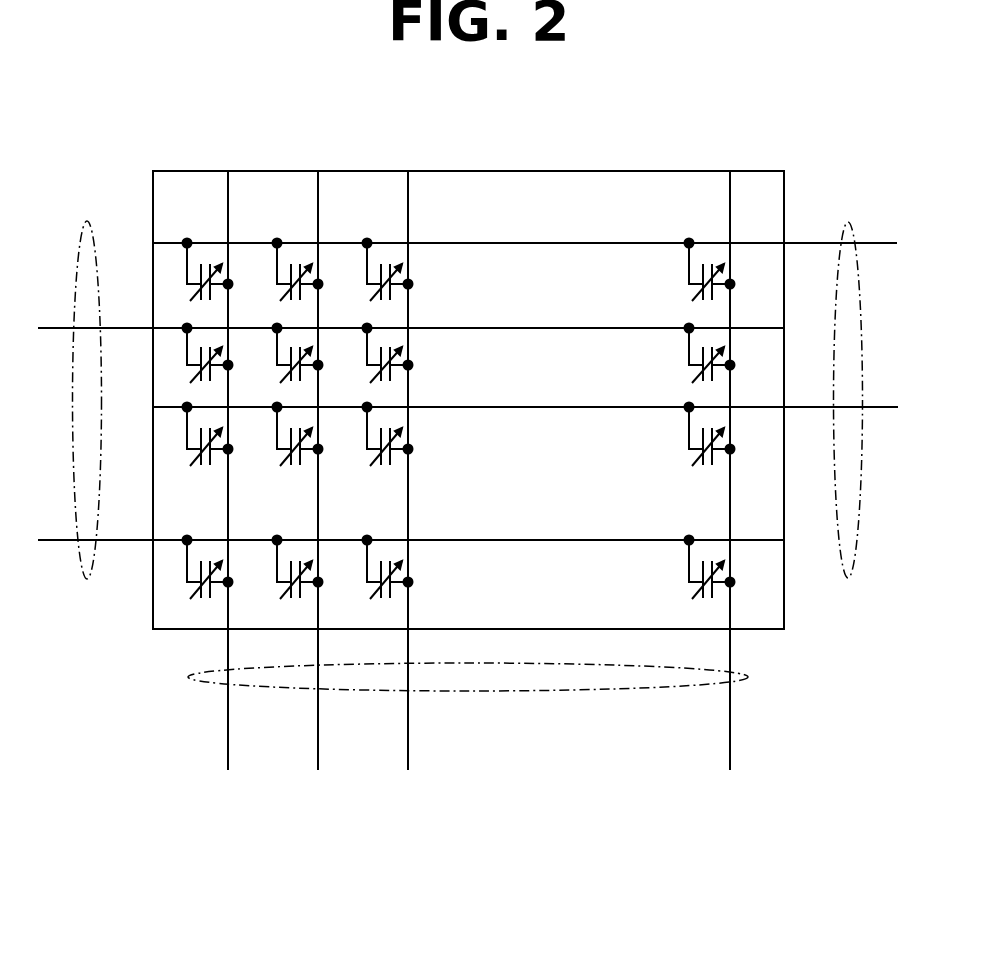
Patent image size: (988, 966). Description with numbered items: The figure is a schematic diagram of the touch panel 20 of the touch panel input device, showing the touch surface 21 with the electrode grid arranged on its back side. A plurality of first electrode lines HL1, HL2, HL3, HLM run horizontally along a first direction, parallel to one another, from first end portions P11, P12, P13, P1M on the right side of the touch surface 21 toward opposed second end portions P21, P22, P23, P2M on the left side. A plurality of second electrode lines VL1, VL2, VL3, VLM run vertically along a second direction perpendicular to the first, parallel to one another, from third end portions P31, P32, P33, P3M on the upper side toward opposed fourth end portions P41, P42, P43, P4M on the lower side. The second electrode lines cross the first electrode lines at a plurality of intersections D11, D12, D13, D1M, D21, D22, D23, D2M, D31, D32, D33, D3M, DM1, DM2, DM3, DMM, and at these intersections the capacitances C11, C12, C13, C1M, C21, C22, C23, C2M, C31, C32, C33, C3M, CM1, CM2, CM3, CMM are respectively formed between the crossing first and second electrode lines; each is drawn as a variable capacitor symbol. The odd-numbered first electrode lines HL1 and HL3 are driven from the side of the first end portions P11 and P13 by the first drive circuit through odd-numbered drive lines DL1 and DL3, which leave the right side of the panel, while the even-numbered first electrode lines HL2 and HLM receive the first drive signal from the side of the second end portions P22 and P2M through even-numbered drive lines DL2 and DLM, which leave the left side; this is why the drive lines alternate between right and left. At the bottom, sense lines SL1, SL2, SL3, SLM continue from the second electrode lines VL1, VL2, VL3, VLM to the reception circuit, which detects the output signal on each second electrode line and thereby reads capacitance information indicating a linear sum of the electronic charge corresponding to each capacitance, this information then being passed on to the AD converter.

The touch panel 20 is at (467, 171).
The touch surface 21 is at (568, 193).
The first electrode line HL1 is at (630, 243).
The first electrode line HL2 is at (630, 328).
The first electrode line HL3 is at (630, 407).
The first electrode line HLM is at (630, 540).
The drive line DL1 is at (885, 243).
The drive line DL2 is at (48, 328).
The drive line DL3 is at (888, 407).
The drive line DLM is at (48, 540).
The second electrode line VL1 is at (225, 623).
The second electrode line VL2 is at (313, 623).
The second electrode line VL3 is at (400, 623).
The second electrode line VLM is at (737, 623).
The sense line SL1 is at (228, 770).
The sense line SL2 is at (318, 770).
The sense line SL3 is at (408, 770).
The sense line SLM is at (730, 770).
The first end portion P11 is at (784, 241).
The first end portion P12 is at (784, 326).
The first end portion P13 is at (784, 405).
The first end portion P1M is at (784, 543).
The second end portion P21 is at (153, 241).
The second end portion P22 is at (153, 326).
The second end portion P23 is at (153, 405).
The second end portion P2M is at (153, 543).
The third end portion P31 is at (228, 170).
The third end portion P32 is at (318, 170).
The third end portion P33 is at (408, 170).
The third end portion P3M is at (730, 170).
The fourth end portion P41 is at (227, 631).
The fourth end portion P42 is at (317, 631).
The fourth end portion P43 is at (407, 631).
The fourth end portion P4M is at (728, 630).
The capacitance C11 is at (208, 284).
The capacitance C12 is at (298, 284).
The capacitance C13 is at (388, 284).
The capacitance C1M is at (710, 284).
The capacitance C21 is at (208, 366).
The capacitance C22 is at (298, 366).
The capacitance C23 is at (388, 366).
The capacitance C2M is at (710, 366).
The capacitance C31 is at (208, 448).
The capacitance C32 is at (298, 448).
The capacitance C33 is at (388, 448).
The capacitance C3M is at (710, 448).
The capacitance CM1 is at (208, 581).
The capacitance CM2 is at (298, 581).
The capacitance CM3 is at (388, 581).
The capacitance CMM is at (710, 581).
The intersection D11 is at (242, 230).
The intersection D12 is at (332, 230).
The intersection D13 is at (422, 230).
The intersection D1M is at (744, 230).
The intersection D21 is at (240, 313).
The intersection D22 is at (330, 313).
The intersection D23 is at (420, 313).
The intersection D2M is at (742, 313).
The intersection D31 is at (240, 391).
The intersection D32 is at (330, 391).
The intersection D33 is at (420, 391).
The intersection D3M is at (742, 391).
The intersection DM1 is at (240, 525).
The intersection DM2 is at (330, 525).
The intersection DM3 is at (420, 525).
The intersection DMM is at (742, 525).